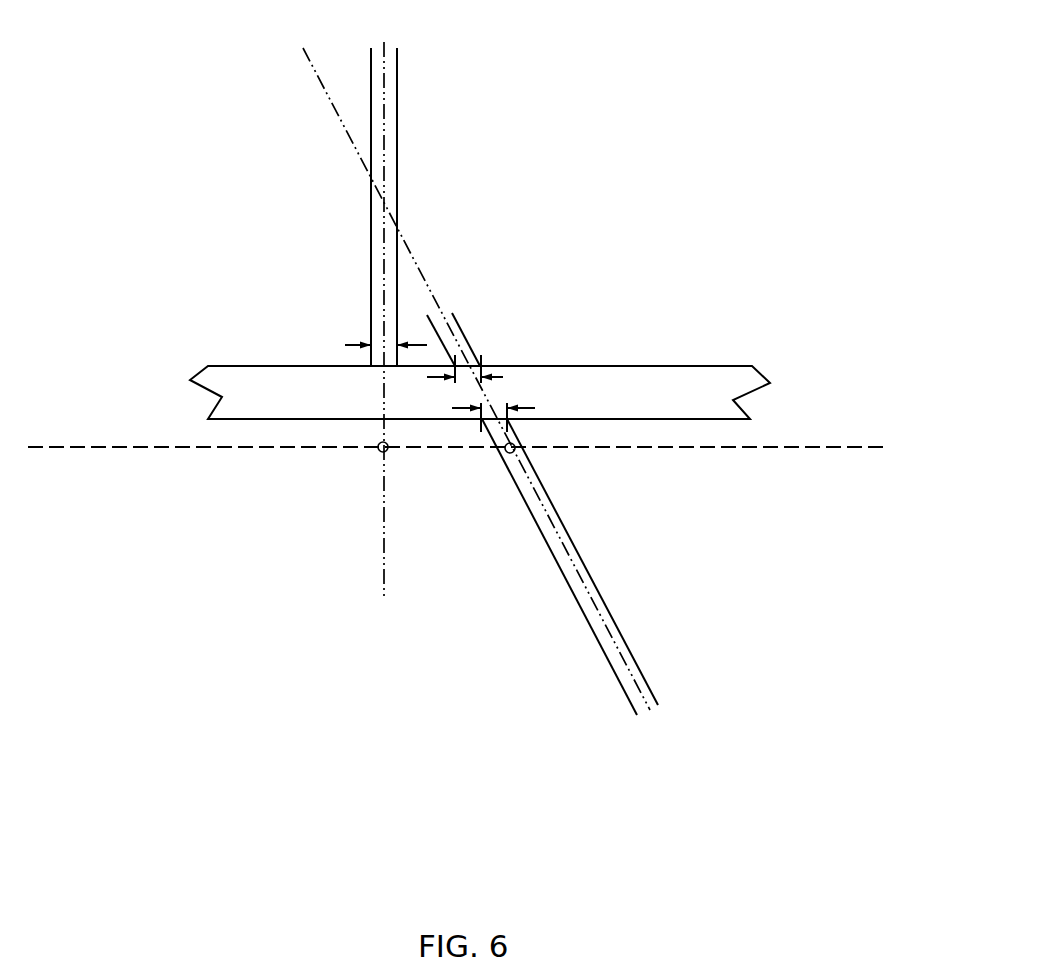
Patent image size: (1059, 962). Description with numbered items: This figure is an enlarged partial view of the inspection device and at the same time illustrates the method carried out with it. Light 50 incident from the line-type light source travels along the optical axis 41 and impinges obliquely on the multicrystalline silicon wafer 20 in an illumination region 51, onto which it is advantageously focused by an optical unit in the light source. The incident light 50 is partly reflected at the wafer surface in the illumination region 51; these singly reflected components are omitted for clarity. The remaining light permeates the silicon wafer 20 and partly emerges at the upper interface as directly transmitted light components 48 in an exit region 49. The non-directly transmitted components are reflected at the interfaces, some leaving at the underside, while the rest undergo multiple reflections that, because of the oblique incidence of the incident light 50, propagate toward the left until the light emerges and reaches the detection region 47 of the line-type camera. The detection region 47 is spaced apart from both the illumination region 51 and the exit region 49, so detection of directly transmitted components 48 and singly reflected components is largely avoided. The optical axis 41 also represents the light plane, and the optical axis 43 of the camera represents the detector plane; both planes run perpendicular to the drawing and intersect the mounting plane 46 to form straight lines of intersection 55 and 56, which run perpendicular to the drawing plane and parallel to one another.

The multicrystalline silicon wafer 20 is at (622, 387).
The optical axis of the line-type light source 41 is at (592, 605).
The optical axis of the line-type camera 43 is at (384, 65).
The mounting plane 46 is at (158, 447).
The detection region 47 is at (345, 345).
The directly transmitted light components 48 is at (458, 330).
The exit region 49 is at (503, 375).
The incident light 50 is at (658, 707).
The illumination region 51 is at (528, 408).
The straight line of intersection of the light plane with the mounting plane 55 is at (505, 465).
The straight line of intersection of the detector plane with the mounting plane 56 is at (383, 452).